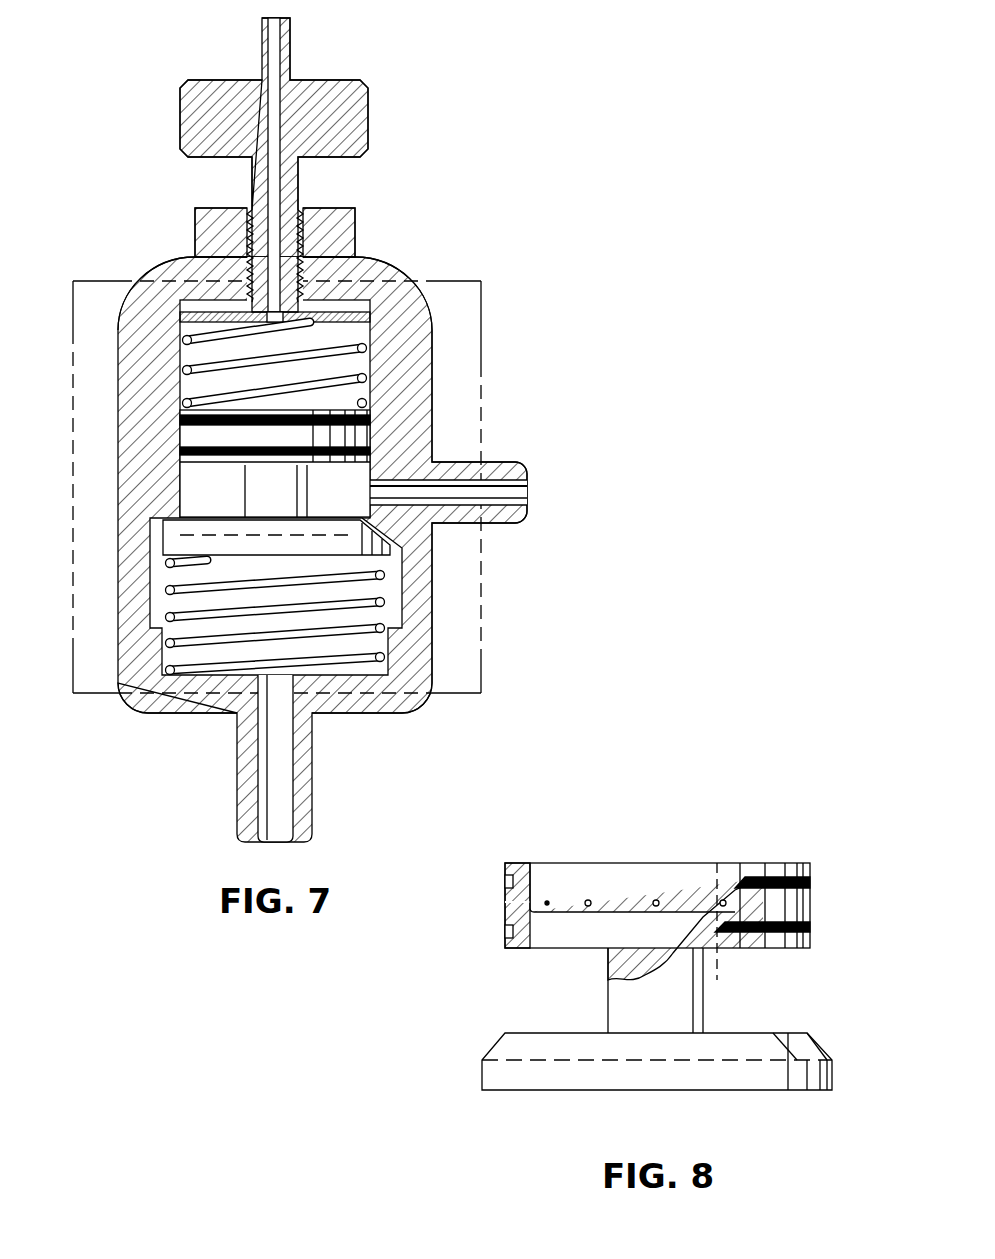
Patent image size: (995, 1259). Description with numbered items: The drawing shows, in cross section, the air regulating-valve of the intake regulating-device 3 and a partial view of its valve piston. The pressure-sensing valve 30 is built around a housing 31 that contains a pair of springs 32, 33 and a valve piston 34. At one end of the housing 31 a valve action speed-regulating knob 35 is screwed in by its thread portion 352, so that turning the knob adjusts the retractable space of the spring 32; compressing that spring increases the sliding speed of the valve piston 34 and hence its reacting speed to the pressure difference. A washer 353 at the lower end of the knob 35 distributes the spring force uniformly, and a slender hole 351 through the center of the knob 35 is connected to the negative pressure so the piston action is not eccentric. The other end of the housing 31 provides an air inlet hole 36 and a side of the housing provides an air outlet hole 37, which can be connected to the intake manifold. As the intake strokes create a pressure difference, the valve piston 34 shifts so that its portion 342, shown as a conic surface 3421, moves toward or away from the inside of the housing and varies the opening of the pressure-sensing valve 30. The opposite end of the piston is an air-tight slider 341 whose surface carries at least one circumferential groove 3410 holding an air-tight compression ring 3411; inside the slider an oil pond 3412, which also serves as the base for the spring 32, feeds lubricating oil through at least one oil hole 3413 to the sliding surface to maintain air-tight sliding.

In FIG. 7, the intake regulating-device 3 is at (583, 155).
In FIG. 7, the pressure-sensing valve 30 is at (483, 607).
In FIG. 7, the housing 31 is at (433, 290).
In FIG. 7, the spring 32 is at (412, 372).
In FIG. 7, the spring 33 is at (333, 660).
In FIG. 7, the valve piston 34 is at (277, 505).
In FIG. 8, the valve piston 34 is at (470, 1022).
In FIG. 7, the air-tight slider 341 is at (225, 435).
In FIG. 8, the air-tight slider 341 is at (552, 935).
In FIG. 7, the portion capable of air-tight fitting 342 is at (305, 543).
In FIG. 8, the portion capable of air-tight fitting 342 is at (553, 1075).
In FIG. 8, the circumferential groove 3410 is at (500, 885).
In FIG. 7, the air-tight compression ring 3411 is at (412, 433).
In FIG. 8, the air-tight compression ring 3411 is at (810, 882).
In FIG. 8, the oil pond 3412 is at (742, 875).
In FIG. 8, the oil hole 3413 is at (535, 900).
In FIG. 7, the conic surface 3421 is at (178, 523).
In FIG. 8, the conic surface 3421 is at (835, 1038).
In FIG. 7, the valve action speed-regulating knob 35 is at (353, 120).
In FIG. 7, the slender hole 351 is at (273, 113).
In FIG. 7, the thread portion 352 is at (317, 233).
In FIG. 7, the washer 353 is at (178, 307).
In FIG. 7, the air inlet hole 36 is at (275, 768).
In FIG. 7, the air outlet hole 37 is at (520, 493).